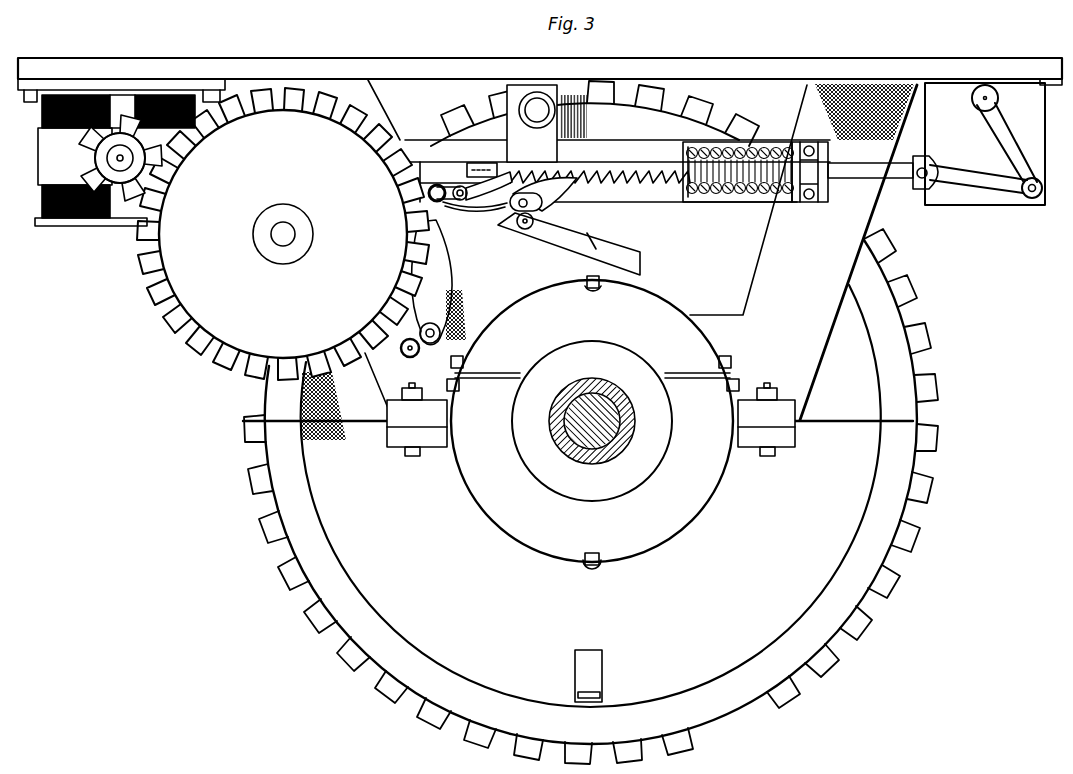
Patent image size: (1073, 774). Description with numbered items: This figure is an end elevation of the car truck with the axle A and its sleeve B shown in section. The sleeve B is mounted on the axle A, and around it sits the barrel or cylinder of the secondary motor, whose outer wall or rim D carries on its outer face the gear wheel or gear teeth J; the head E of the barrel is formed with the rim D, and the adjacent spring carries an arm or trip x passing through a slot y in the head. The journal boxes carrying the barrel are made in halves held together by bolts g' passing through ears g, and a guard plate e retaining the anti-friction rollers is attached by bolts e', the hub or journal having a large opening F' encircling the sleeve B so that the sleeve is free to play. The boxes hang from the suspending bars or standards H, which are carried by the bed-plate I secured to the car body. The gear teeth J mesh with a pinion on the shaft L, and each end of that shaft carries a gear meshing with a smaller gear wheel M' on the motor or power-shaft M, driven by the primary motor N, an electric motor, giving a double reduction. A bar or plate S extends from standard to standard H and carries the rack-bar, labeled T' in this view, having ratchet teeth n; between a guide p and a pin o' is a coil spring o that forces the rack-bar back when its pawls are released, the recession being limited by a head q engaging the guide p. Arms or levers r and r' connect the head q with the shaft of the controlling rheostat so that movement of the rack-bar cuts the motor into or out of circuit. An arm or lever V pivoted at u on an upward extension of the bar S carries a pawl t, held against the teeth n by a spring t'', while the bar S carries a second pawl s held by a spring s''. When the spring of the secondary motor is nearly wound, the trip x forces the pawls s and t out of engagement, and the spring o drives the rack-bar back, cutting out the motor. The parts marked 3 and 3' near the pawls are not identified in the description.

The outer wall or rim of the barrel D is at (591, 492).
The gear wheel or gear teeth J is at (303, 605).
The bar or plate S is at (638, 144).
The bed-plate I is at (540, 80).
The suspending bars or standards H is at (641, 250).
The slide bar T' is at (603, 204).
The ratchet teeth n is at (600, 185).
The pin o' is at (727, 172).
The coil spring o is at (740, 188).
The guide p is at (810, 172).
The head q is at (922, 190).
The arm or lever r is at (986, 173).
The arm or lever r' is at (1004, 133).
The arm or lever V is at (776, 144).
The pin or pivot u is at (537, 110).
The pawl t is at (543, 195).
The spring t'' is at (569, 241).
The pawl s is at (489, 209).
The spring s'' is at (468, 215).
The pawl arm 3 is at (439, 282).
The pin 3' is at (446, 319).
The ears g is at (578, 428).
The bolts g' is at (589, 440).
The head of the barrel E is at (603, 421).
The guard plate e is at (590, 401).
The large opening F' is at (592, 364).
The bolts e' is at (593, 422).
The axle A is at (608, 460).
The sleeve B is at (624, 431).
The arm or trip x is at (603, 690).
The slot y is at (587, 657).
The shaft L is at (232, 240).
The primary motor N is at (47, 159).
The motor or power-shaft M is at (117, 188).
The gear wheel M' is at (120, 197).